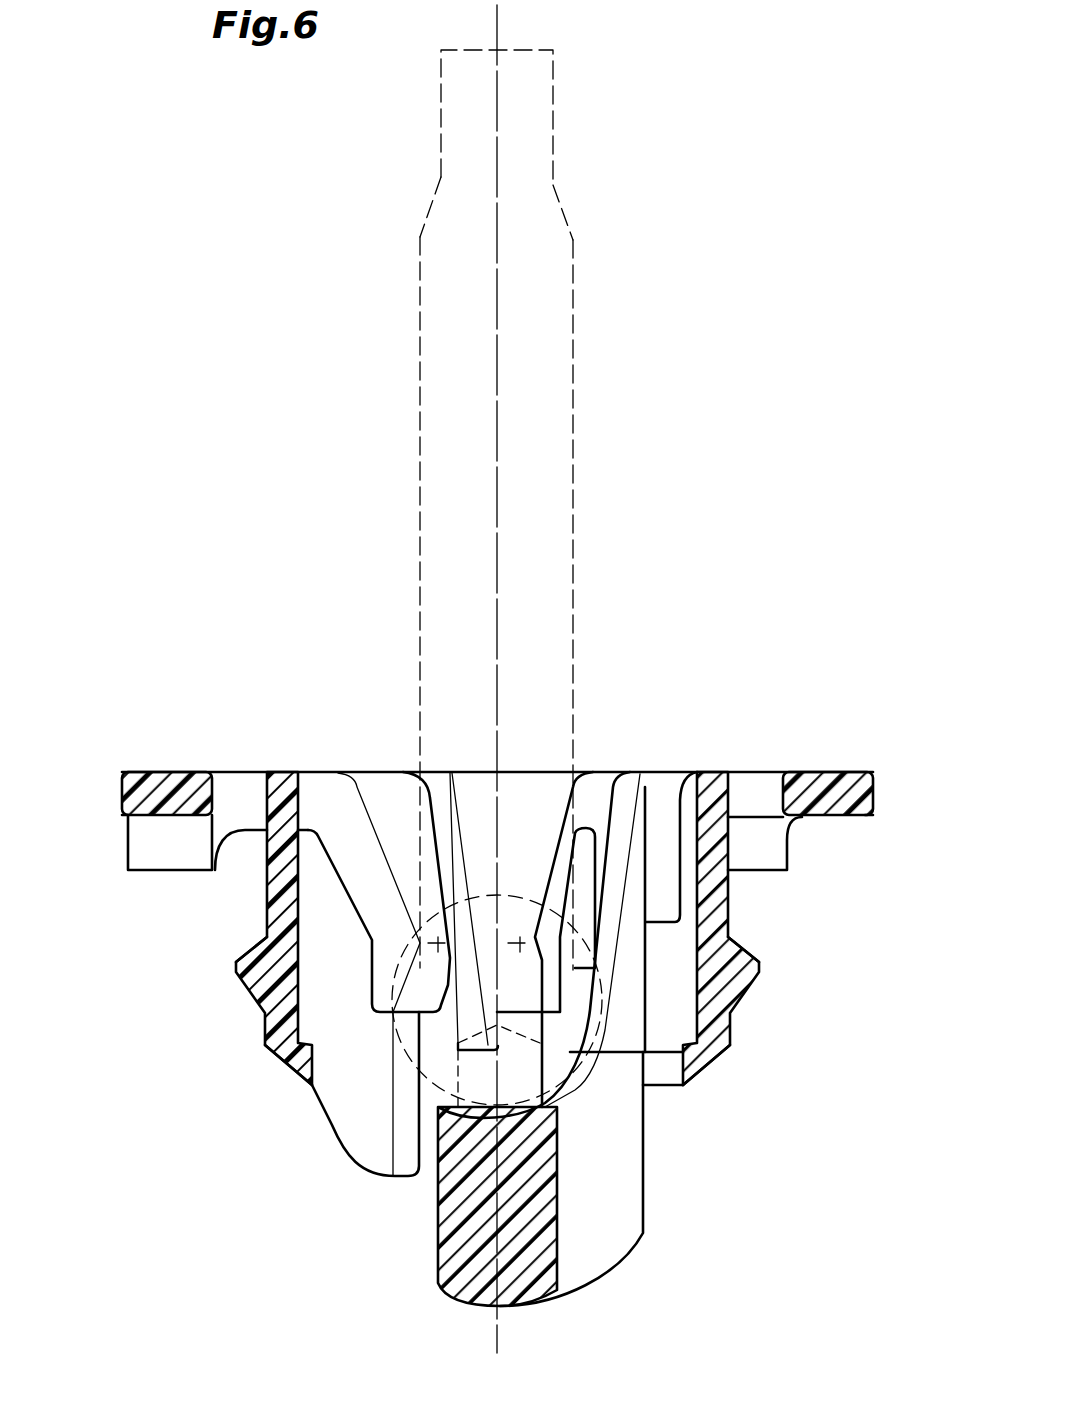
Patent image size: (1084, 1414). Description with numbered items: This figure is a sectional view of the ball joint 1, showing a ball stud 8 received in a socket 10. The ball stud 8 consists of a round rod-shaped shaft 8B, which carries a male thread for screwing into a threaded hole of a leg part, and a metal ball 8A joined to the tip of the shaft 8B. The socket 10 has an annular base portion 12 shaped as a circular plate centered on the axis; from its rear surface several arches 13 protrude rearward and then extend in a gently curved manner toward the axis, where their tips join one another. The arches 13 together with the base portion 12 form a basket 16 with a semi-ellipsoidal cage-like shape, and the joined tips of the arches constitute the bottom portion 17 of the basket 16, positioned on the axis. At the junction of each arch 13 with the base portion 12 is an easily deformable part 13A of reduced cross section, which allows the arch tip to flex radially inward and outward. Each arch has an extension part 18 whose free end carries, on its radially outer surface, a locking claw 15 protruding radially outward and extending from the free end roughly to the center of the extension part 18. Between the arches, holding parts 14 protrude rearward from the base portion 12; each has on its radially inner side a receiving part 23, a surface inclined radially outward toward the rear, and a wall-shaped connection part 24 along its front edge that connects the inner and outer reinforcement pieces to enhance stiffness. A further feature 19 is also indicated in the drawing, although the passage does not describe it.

The ball joint 1 is at (641, 708).
The ball stud 8 is at (563, 205).
The ball 8A is at (573, 1088).
The shaft 8B is at (577, 372).
The socket 10 is at (833, 772).
The base portion 12 is at (148, 870).
The arch 13 is at (226, 904).
The easily deformable part 13A is at (228, 836).
The holding part 14 is at (522, 812).
The locking claw 15 is at (238, 964).
The basket 16 is at (370, 1108).
The bottom portion 17 is at (518, 1292).
The extension part 18 is at (266, 1047).
The flange underside 19 is at (125, 817).
The receiving part 23 is at (520, 940).
The connection part 24 is at (316, 785).